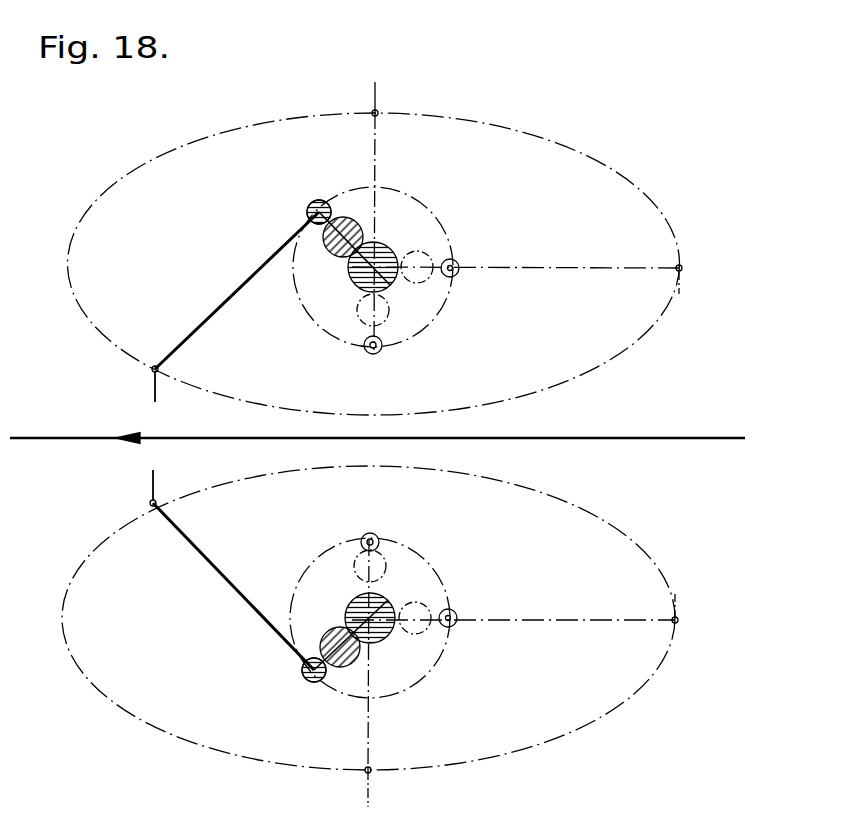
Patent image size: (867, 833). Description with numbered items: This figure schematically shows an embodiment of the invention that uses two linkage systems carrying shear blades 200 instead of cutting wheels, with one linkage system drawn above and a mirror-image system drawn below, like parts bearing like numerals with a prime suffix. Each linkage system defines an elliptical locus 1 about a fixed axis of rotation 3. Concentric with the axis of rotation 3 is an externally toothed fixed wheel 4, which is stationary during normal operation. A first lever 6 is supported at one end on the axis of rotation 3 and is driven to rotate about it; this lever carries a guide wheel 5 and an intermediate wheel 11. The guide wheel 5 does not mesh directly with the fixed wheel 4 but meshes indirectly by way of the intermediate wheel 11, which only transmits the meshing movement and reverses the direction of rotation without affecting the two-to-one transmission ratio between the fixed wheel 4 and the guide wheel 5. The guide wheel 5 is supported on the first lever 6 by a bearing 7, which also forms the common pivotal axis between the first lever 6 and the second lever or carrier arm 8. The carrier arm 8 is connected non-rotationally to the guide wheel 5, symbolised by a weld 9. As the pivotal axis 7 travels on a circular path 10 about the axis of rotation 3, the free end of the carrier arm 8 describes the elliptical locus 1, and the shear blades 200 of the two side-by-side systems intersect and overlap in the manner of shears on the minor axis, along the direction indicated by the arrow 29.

The elliptical locus 1 is at (124, 167).
The fixed axis of rotation 3 is at (394, 289).
The fixed wheel 4 is at (406, 256).
The guide wheel 5 is at (324, 204).
The first lever 6 is at (386, 244).
The bearing 7 is at (315, 200).
The carrier arm 8 is at (224, 295).
The weld 9 is at (308, 218).
The circular path 10 is at (298, 296).
The intermediate wheel 11 is at (338, 255).
The direction arrow 29 is at (67, 436).
The shear blades 200 is at (378, 95).